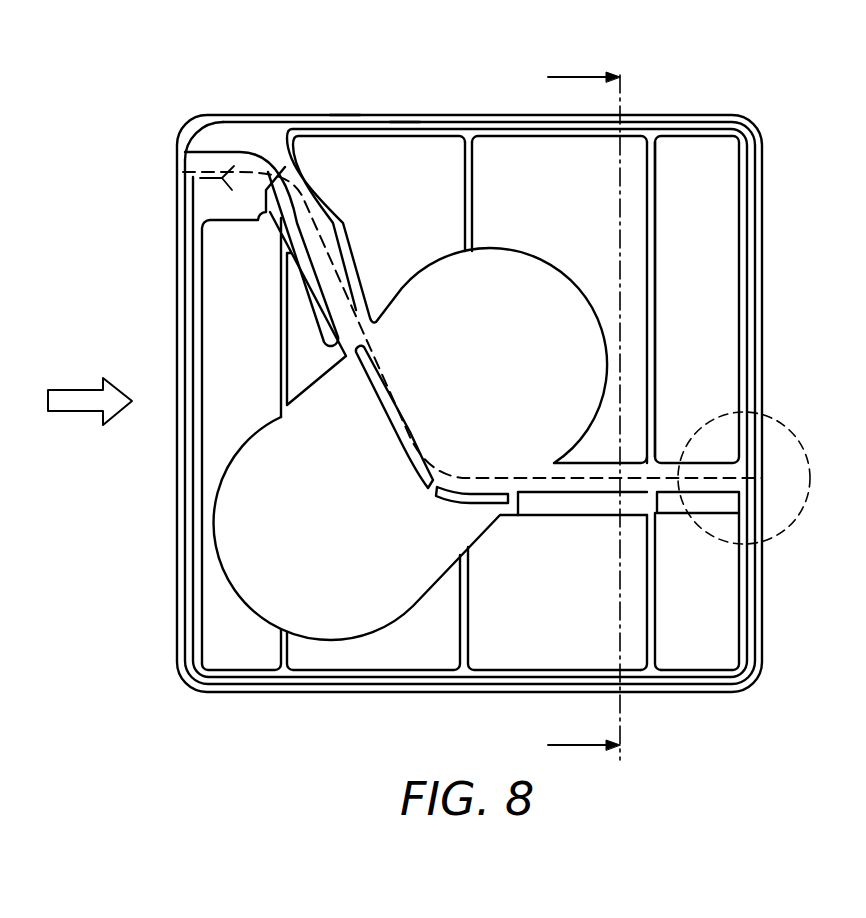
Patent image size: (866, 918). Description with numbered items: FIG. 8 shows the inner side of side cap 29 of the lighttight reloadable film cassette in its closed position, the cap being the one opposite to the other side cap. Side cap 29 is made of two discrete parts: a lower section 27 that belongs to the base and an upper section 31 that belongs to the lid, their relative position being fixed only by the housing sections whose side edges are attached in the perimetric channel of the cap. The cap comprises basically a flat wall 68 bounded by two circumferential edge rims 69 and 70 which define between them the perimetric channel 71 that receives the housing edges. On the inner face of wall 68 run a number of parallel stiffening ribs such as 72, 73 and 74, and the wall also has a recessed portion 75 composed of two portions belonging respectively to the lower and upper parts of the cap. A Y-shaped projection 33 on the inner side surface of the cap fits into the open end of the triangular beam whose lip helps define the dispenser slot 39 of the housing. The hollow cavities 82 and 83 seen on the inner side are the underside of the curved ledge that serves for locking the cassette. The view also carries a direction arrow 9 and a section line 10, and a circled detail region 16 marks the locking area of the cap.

The air flow direction 9 is at (90, 375).
The section line 10- 10 is at (584, 394).
The air passage to motor compartment 16 is at (676, 478).
The lower section of side cap 27 is at (762, 630).
The side cap 29 is at (177, 592).
The upper section of side cap 31 is at (762, 302).
The Y-shaped projection 33 is at (212, 190).
The dispenser slot 39 is at (218, 126).
The flat wall 68 is at (411, 214).
The circumferential edge rim 69 is at (343, 116).
The circumferential edge rim 70 is at (493, 128).
The perimetric channel 71 is at (405, 122).
The stiffening rib 72 is at (281, 324).
The stiffening rib 73 is at (474, 198).
The stiffening rib 74 is at (657, 228).
The recessed portion 75 is at (358, 545).
The hollow cavity 82 is at (388, 438).
The hollow cavity 83 is at (466, 498).